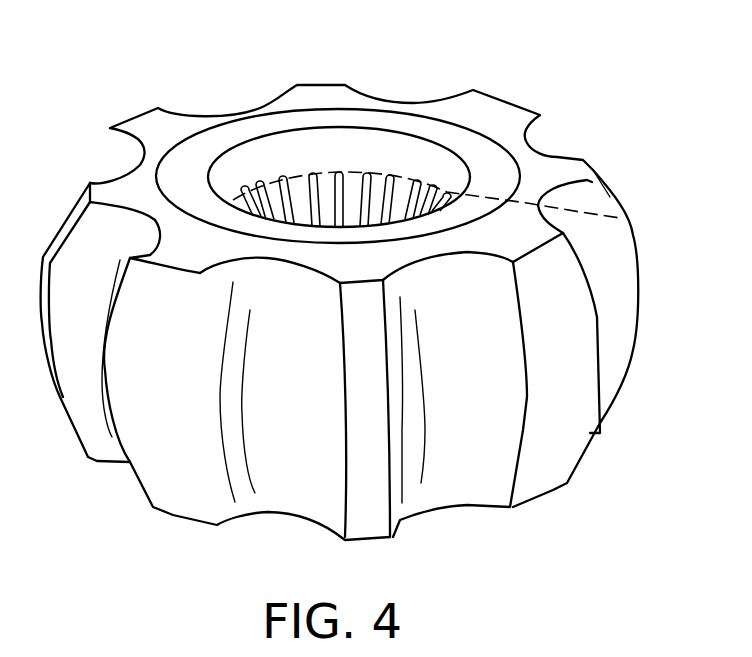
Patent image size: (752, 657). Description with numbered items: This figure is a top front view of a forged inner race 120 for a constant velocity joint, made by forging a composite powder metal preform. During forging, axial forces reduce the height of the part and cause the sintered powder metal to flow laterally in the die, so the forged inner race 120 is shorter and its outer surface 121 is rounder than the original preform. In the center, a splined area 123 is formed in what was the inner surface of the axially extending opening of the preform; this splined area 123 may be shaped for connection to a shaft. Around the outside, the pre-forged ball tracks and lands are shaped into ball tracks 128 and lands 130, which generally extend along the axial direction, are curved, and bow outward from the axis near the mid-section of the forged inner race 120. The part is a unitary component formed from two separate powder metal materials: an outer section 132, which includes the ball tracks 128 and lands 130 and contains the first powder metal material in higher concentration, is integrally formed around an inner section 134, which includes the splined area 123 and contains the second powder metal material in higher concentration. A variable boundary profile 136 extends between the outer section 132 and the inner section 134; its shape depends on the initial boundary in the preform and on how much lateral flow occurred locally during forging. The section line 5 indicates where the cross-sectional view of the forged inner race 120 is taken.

The forged inner race 120 is at (120, 88).
The splined area 123 is at (290, 140).
The inner section 134 is at (405, 118).
The variable boundary profile 136 is at (468, 127).
The outer section 132 is at (550, 167).
The section line 5- 5 is at (620, 218).
The outer surface 121 is at (590, 313).
The lands 130 is at (553, 427).
The ball tracks 128 is at (490, 463).